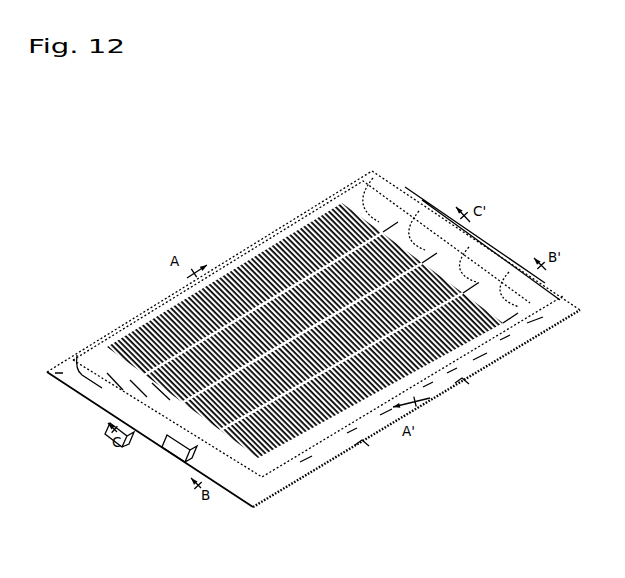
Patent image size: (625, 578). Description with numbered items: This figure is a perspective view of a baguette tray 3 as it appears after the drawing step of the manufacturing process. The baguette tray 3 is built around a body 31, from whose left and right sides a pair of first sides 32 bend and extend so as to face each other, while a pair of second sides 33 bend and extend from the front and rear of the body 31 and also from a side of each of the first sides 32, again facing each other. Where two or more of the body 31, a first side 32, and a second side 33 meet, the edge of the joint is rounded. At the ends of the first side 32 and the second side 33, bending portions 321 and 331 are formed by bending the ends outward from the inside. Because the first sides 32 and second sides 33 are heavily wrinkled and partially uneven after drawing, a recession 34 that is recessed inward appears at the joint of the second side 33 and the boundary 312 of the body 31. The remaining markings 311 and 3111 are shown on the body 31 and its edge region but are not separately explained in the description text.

The baguette tray 3 is at (200, 217).
The body 31 is at (440, 113).
The cylindrical lens 311 is at (370, 184).
The boundary 312 is at (412, 200).
The lens end ledge 3111 is at (492, 247).
The first side 32 is at (522, 346).
The bending portion 321 is at (492, 370).
The second side 33 is at (177, 465).
The bending portion 331 is at (160, 455).
The recession 34 is at (100, 406).